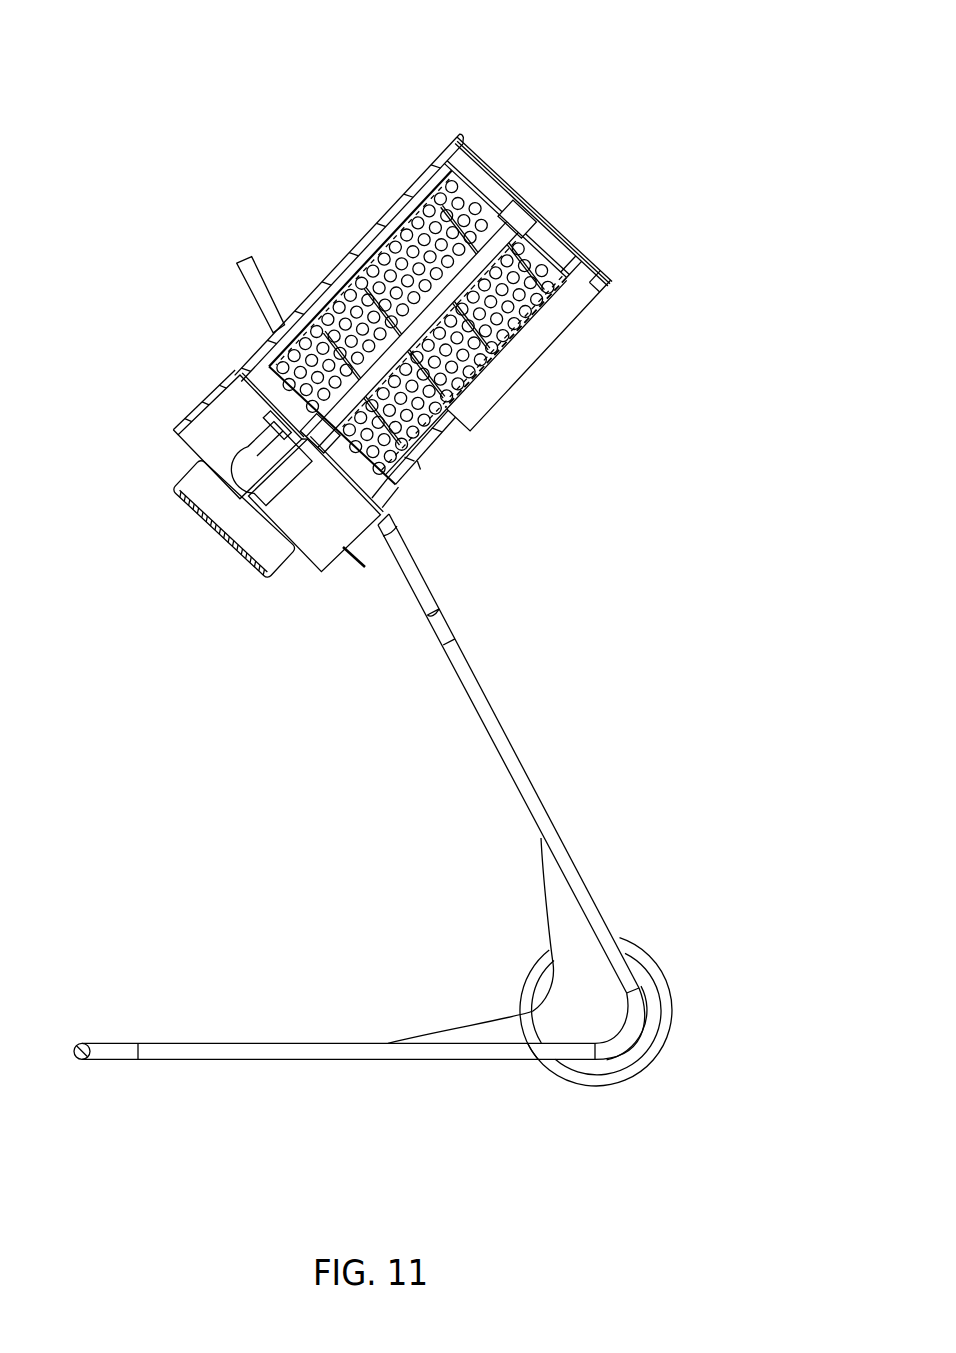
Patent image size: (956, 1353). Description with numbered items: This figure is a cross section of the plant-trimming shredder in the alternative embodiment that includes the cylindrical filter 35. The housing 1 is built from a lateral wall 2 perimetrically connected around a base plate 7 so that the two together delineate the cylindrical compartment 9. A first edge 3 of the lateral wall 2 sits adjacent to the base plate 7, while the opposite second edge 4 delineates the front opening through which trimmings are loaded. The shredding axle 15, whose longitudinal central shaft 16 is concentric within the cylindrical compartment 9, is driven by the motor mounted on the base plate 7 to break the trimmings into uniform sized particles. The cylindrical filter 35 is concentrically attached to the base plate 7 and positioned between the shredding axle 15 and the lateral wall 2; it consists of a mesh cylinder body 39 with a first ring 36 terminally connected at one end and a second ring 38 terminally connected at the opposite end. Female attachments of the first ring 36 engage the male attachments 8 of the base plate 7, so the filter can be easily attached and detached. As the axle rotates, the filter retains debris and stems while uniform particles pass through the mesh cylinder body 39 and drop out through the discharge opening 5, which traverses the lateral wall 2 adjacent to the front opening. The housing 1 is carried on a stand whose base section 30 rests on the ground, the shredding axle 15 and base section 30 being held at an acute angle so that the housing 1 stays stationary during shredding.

The housing 1 is at (402, 88).
The lateral wall 2 is at (392, 200).
The first edge 3 is at (185, 425).
The second edge 4 is at (457, 136).
The discharge opening 5 is at (545, 334).
The base plate 7 is at (250, 390).
The male attachments 8 is at (273, 418).
The cylindrical compartment 9 is at (377, 247).
The shredding axle 15 is at (512, 208).
The central shaft 16 is at (578, 264).
The base section 30 is at (343, 1043).
The cylindrical filter 35 is at (478, 380).
The first ring 36 is at (353, 485).
The second ring 38 is at (488, 178).
The mesh cylinder body 39 is at (550, 316).